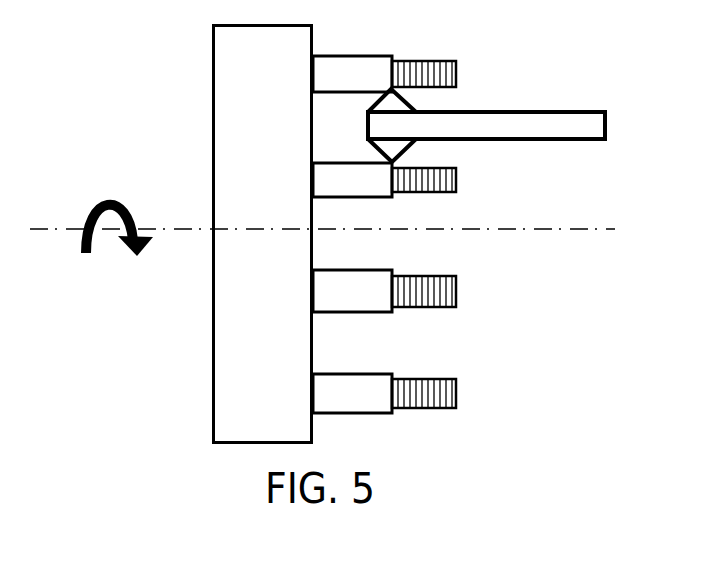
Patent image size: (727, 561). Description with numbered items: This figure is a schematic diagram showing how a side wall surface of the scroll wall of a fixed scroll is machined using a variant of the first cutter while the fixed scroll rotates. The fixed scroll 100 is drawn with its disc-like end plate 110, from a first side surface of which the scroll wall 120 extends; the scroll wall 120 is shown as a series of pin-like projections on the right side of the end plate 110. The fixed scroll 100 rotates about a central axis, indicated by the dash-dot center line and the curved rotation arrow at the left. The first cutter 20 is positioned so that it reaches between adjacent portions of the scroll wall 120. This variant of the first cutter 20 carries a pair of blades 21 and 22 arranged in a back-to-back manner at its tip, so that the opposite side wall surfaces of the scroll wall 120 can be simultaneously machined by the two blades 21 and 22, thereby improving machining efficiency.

The fixed scroll 100 is at (195, 352).
The disc-like end plate 110 is at (227, 152).
The scroll wall 120 is at (357, 388).
The first cutter 20 is at (513, 125).
The blade 21 is at (415, 102).
The blade 22 is at (410, 151).